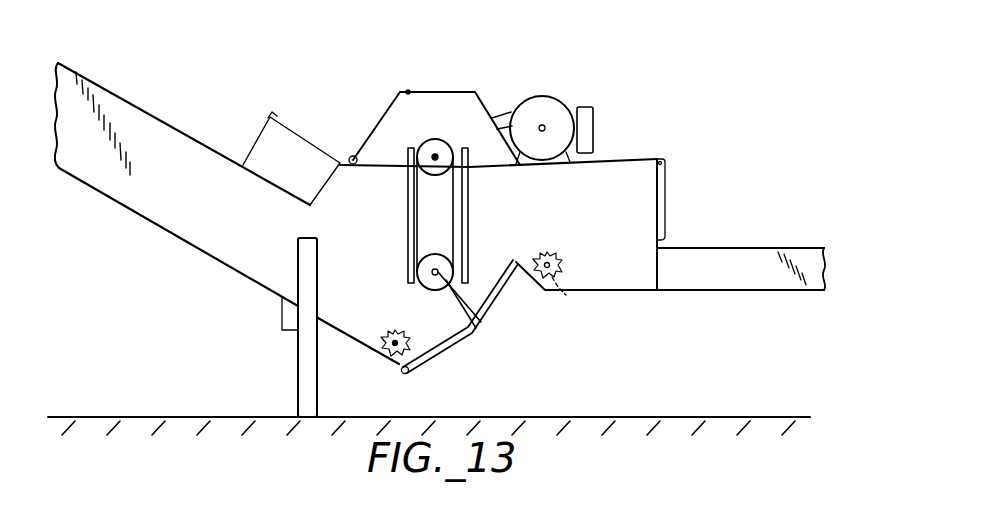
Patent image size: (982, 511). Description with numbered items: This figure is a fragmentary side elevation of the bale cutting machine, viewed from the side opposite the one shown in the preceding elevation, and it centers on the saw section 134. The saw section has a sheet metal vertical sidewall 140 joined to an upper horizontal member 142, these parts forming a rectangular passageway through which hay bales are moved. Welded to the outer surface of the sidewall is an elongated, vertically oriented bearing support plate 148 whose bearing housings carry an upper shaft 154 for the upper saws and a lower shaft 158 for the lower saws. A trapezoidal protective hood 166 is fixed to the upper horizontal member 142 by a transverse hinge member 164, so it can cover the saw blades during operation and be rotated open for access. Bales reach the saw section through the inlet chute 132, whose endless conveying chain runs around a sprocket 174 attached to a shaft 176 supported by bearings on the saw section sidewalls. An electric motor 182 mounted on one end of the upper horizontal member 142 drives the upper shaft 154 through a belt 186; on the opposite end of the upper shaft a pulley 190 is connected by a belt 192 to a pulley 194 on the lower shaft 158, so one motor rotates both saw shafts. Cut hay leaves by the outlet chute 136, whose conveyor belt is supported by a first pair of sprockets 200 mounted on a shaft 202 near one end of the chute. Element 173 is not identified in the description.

The inlet chute 132 is at (695, 289).
The saw section 134 is at (408, 92).
The outlet chute 136 is at (173, 230).
The vertical sidewall 140 is at (617, 231).
The upper horizontal member 142 is at (340, 161).
The bearing support plate 148 is at (466, 218).
The upper shaft 154 is at (436, 155).
The lower shaft 158 is at (467, 338).
The transverse hinge member 164 is at (348, 155).
The protective hood 166 is at (428, 90).
The post 173 is at (305, 363).
The sprocket 174 is at (556, 279).
The shaft 176 is at (544, 288).
The electric motor 182 is at (556, 108).
The belt 186 is at (498, 117).
The pulley 190 is at (418, 142).
The belt 192 is at (413, 213).
The pulley 194 is at (474, 327).
The first pair of sprockets 200 is at (409, 373).
The shaft 202 is at (394, 364).